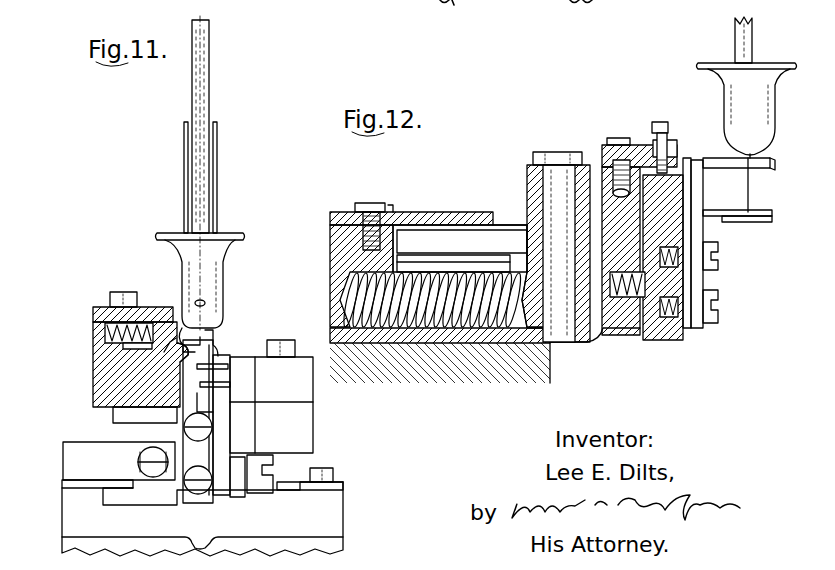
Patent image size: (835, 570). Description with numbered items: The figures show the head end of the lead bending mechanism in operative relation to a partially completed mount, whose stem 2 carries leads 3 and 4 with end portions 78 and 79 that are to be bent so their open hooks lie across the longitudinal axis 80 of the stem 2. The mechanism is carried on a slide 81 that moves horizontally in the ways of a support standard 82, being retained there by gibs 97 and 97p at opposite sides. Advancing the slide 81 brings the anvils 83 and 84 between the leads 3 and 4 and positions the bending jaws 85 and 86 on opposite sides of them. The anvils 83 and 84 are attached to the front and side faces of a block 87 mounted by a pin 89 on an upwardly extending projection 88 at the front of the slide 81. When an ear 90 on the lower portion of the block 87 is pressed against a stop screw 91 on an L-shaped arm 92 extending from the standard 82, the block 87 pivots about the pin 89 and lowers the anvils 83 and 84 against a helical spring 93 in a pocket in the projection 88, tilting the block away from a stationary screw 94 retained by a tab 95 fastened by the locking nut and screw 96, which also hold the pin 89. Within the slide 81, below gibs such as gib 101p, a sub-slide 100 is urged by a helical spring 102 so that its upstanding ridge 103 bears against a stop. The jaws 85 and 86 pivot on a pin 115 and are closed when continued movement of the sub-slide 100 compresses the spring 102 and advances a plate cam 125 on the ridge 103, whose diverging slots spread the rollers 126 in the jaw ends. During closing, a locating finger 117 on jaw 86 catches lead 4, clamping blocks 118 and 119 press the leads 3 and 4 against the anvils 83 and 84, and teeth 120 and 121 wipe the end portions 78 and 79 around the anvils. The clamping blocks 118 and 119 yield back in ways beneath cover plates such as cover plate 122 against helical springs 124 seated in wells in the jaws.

In FIG. 11, the stem 2 is at (180, 262).
In FIG. 12, the stem 2 is at (722, 118).
In FIG. 11, the lead 3 is at (176, 338).
In FIG. 12, the lead 3 is at (750, 156).
In FIG. 11, the lead 4 is at (212, 346).
In FIG. 12, the lead 4 is at (751, 199).
In FIG. 11, the end portion 78 is at (212, 338).
In FIG. 12, the end portion 78 is at (746, 172).
In FIG. 11, the end portion 79 is at (186, 411).
In FIG. 12, the end portion 79 is at (740, 224).
In FIG. 11, the longitudinal axis 80 is at (205, 290).
In FIG. 11, the slide 81 is at (300, 495).
In FIG. 12, the slide 81 is at (590, 337).
In FIG. 11, the support standard 82 is at (344, 545).
In FIG. 12, the support standard 82 is at (550, 375).
In FIG. 11, the anvil 83 is at (185, 346).
In FIG. 12, the anvil 83 is at (762, 166).
In FIG. 11, the anvil 84 is at (212, 390).
In FIG. 12, the anvil 84 is at (760, 218).
In FIG. 11, the bending jaw 85 is at (92, 378).
In FIG. 12, the bending jaw 85 is at (527, 172).
In FIG. 11, the bending jaw 86 is at (314, 414).
In FIG. 12, the bending jaw 86 is at (512, 226).
In FIG. 11, the block 87 is at (262, 470).
In FIG. 12, the block 87 is at (686, 232).
In FIG. 12, the projection 88 is at (604, 198).
In FIG. 12, the pin 89 is at (612, 192).
In FIG. 11, the ear 90 is at (152, 490).
In FIG. 11, the stop screw 91 is at (146, 455).
In FIG. 11, the L-shaped arm 92 is at (70, 444).
In FIG. 12, the helical spring 93 is at (630, 297).
In FIG. 12, the stationary screw 94 is at (666, 126).
In FIG. 12, the tab 95 is at (648, 150).
In FIG. 12, the locking nut and screw 96 is at (606, 148).
In FIG. 11, the gib 97 is at (62, 483).
In FIG. 11, the gib 97p is at (330, 475).
In FIG. 12, the sub-slide 100 is at (383, 332).
In FIG. 12, the gib 101p is at (470, 268).
In FIG. 12, the helical spring 102 is at (446, 330).
In FIG. 12, the upstanding ridge 103 is at (396, 242).
In FIG. 12, the pin 115 is at (540, 154).
In FIG. 11, the locating finger 117 is at (270, 342).
In FIG. 11, the clamping block 118 is at (182, 336).
In FIG. 11, the clamping block 119 is at (212, 364).
In FIG. 11, the tooth 120 is at (184, 372).
In FIG. 11, the tooth 121 is at (212, 414).
In FIG. 11, the cover plate 122 is at (96, 309).
In FIG. 11, the helical spring 124 is at (108, 346).
In FIG. 12, the plate cam 125 is at (398, 214).
In FIG. 12, the roller 126 is at (370, 205).